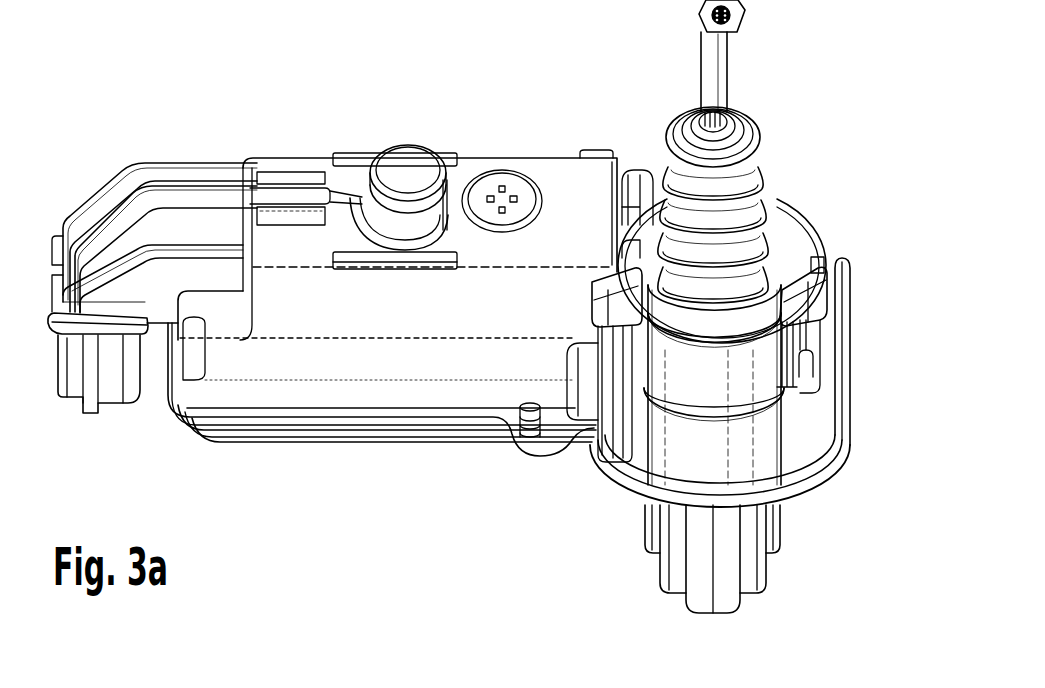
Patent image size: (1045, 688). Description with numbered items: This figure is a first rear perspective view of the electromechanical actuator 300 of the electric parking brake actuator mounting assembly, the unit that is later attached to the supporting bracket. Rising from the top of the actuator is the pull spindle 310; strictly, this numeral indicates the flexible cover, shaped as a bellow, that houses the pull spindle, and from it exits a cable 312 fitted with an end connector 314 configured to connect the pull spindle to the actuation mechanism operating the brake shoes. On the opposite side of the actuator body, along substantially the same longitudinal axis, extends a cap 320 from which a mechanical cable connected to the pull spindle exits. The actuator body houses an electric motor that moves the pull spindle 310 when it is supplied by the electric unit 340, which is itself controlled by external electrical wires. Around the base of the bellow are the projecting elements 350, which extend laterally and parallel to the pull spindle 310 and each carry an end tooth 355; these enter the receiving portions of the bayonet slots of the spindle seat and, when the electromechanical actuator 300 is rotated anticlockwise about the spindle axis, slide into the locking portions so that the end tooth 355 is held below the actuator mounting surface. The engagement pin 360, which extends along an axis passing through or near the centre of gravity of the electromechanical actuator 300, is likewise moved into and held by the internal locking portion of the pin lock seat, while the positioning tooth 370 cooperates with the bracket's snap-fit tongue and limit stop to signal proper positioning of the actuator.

The electromechanical actuator 300 is at (188, 93).
The pull spindle 310 is at (747, 207).
The cable 312 is at (740, 110).
The end connector 314 is at (710, 58).
The cap 320 is at (757, 557).
The electric unit 340 is at (114, 383).
The projecting element 350 is at (800, 356).
The end tooth 355 is at (620, 318).
The engagement pin 360 is at (412, 168).
The positioning tooth 370 is at (280, 190).